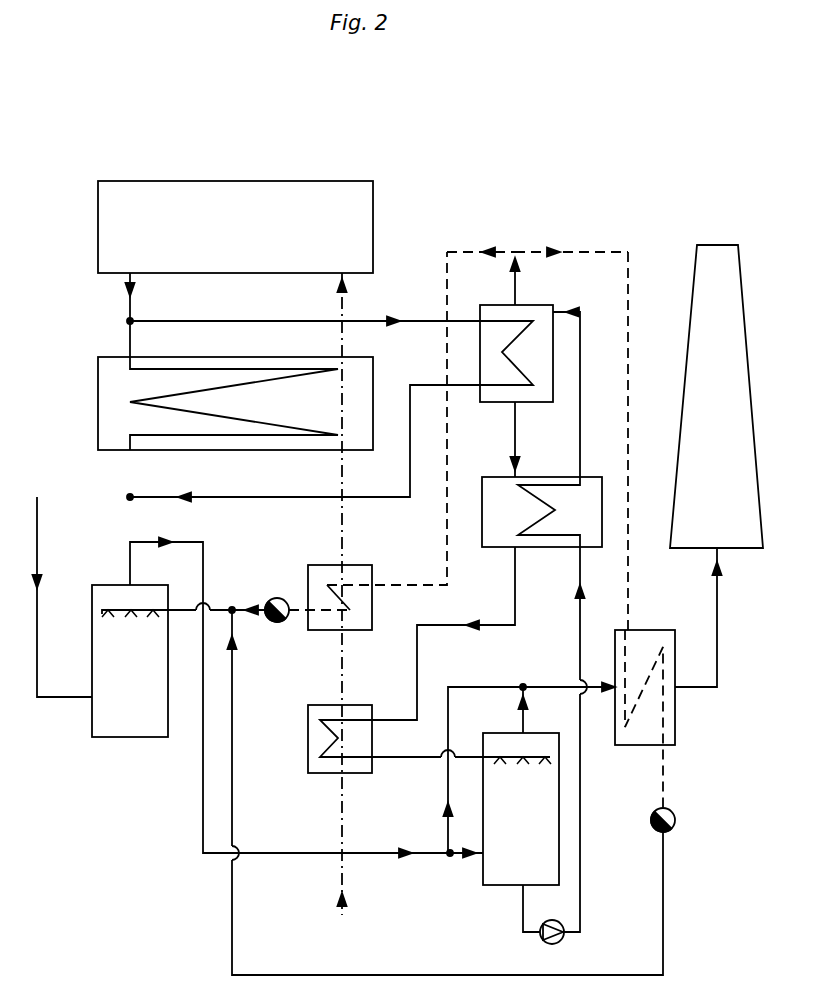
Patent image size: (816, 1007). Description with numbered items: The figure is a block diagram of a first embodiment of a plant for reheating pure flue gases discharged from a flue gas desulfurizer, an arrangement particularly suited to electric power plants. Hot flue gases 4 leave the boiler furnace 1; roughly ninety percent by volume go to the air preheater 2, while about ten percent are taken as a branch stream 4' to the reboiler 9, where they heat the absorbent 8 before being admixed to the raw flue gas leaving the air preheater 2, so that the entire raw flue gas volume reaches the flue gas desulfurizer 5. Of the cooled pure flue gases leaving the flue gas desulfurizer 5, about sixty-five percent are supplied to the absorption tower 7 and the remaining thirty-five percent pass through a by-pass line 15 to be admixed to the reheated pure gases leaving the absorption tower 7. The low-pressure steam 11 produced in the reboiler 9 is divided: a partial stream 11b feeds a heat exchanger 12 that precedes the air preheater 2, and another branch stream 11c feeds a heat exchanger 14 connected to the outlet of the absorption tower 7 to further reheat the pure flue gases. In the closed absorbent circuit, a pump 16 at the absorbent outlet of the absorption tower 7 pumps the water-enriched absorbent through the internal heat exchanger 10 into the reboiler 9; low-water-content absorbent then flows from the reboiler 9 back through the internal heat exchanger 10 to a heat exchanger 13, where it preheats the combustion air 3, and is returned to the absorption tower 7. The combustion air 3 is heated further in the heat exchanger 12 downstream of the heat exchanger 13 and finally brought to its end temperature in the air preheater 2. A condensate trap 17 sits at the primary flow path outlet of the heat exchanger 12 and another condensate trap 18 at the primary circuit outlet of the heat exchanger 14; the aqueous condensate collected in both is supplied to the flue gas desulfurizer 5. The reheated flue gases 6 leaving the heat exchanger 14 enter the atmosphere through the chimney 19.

The boiler furnace 1 is at (218, 192).
The air preheater 2 is at (108, 395).
The combustion air 3 is at (347, 307).
The hot flue gases 4 is at (107, 315).
The branch stream 4' is at (305, 307).
The flue gas desulfurizer 5 is at (101, 583).
The reheated flue gases 6 is at (198, 783).
The absorption tower 7 is at (497, 871).
The absorbent 8 is at (584, 399).
The reboiler 9 is at (530, 309).
The internal heat exchanger 10 is at (541, 482).
The low-pressure steam 11 is at (513, 285).
The partial stream 11b is at (462, 250).
The branch stream 11c is at (580, 250).
The heat exchanger 12 is at (357, 575).
The heat exchanger 13 is at (355, 708).
The heat exchanger 14 is at (650, 640).
The by-pass line 15 is at (483, 687).
The pump 16 is at (540, 941).
The condensate trap 17 is at (277, 597).
The condensate trap 18 is at (675, 815).
The chimney 19 is at (693, 355).